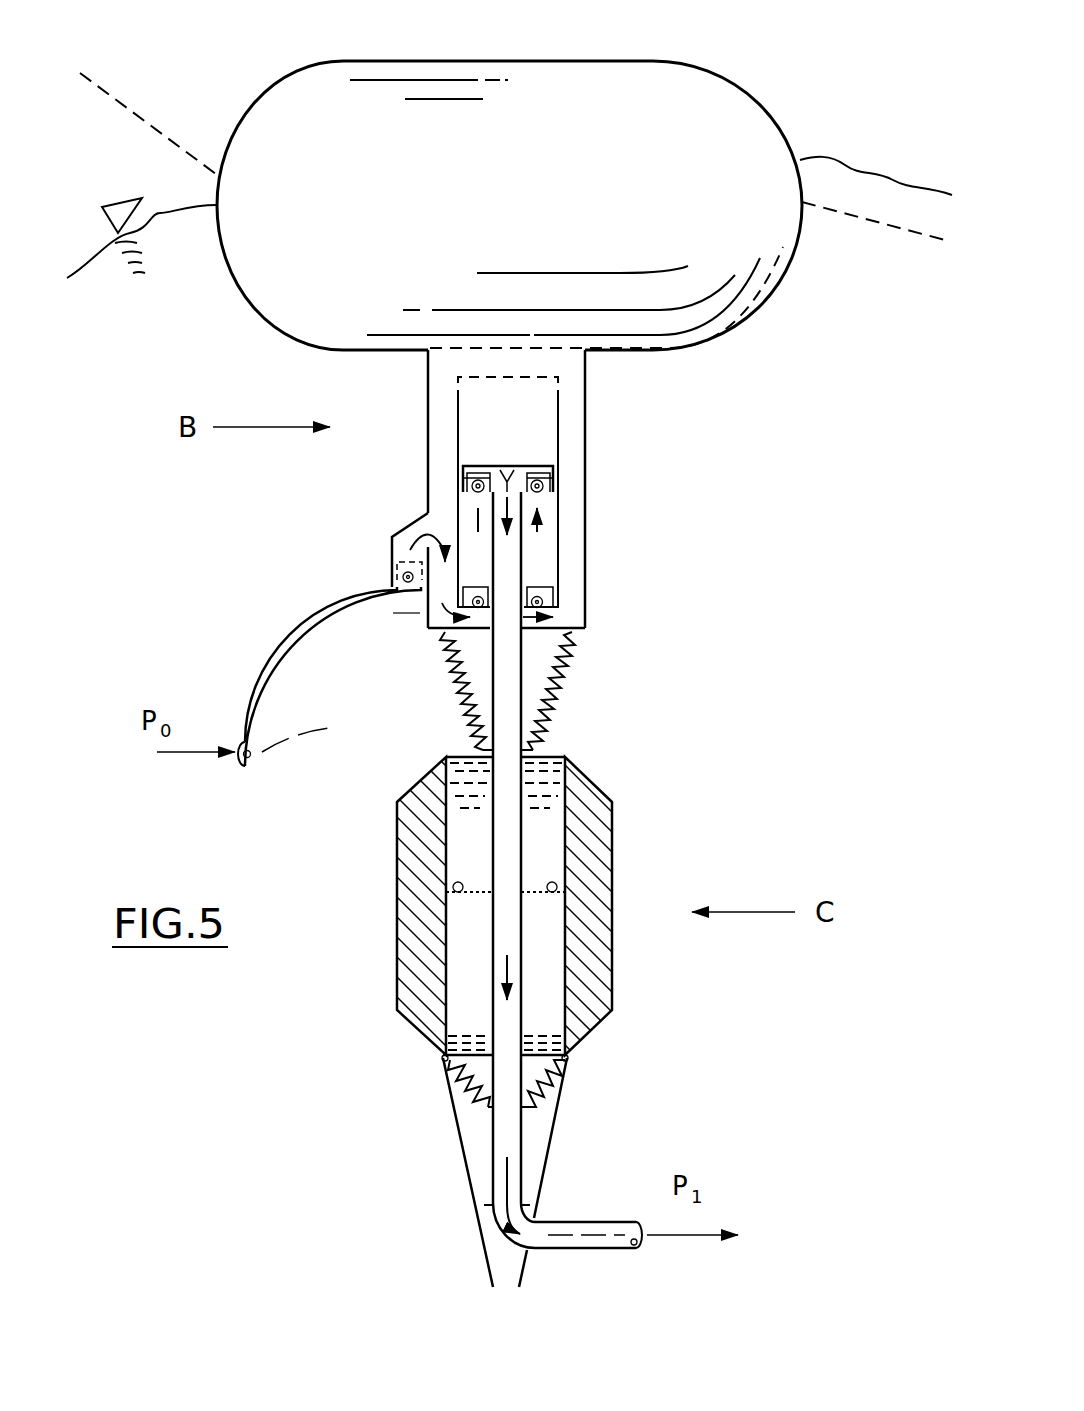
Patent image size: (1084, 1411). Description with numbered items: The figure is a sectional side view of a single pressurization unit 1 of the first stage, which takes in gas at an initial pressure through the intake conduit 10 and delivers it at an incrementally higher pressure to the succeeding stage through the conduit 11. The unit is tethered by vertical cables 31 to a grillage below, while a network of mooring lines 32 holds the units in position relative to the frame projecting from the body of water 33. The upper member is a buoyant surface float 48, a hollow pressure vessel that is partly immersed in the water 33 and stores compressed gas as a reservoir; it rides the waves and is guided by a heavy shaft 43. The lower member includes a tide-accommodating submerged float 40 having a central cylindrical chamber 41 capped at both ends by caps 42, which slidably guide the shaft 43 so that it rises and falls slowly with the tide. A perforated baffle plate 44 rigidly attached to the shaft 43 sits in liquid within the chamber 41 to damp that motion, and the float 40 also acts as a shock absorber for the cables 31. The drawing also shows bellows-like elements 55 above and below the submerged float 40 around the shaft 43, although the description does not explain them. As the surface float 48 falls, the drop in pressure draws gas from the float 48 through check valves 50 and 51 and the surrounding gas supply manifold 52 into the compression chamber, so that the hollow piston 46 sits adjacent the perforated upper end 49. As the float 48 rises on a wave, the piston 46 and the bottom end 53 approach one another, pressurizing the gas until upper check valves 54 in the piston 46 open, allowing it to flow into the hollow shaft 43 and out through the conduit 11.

The pressurization unit 1 is at (564, 56).
The intake conduit 10 is at (300, 727).
The conduit 11 is at (585, 1228).
The vertical cables 31 is at (460, 1143).
The mooring lines 32 is at (157, 118).
The body of water 33 is at (828, 158).
The submerged float 40 is at (496, 899).
The central cylindrical chamber 41 is at (566, 808).
The caps 42 is at (548, 757).
The shaft 43 is at (524, 945).
The baffle plate 44 is at (462, 883).
The piston 46 is at (500, 466).
The surface float 48 is at (782, 289).
The upper end 49 is at (534, 383).
The check valve 50 is at (395, 600).
The check valve 51 is at (548, 605).
The gas supply manifold 52 is at (428, 518).
The bottom end 53 is at (548, 577).
The upper check valves 54 is at (466, 486).
The bellows 55 is at (565, 685).